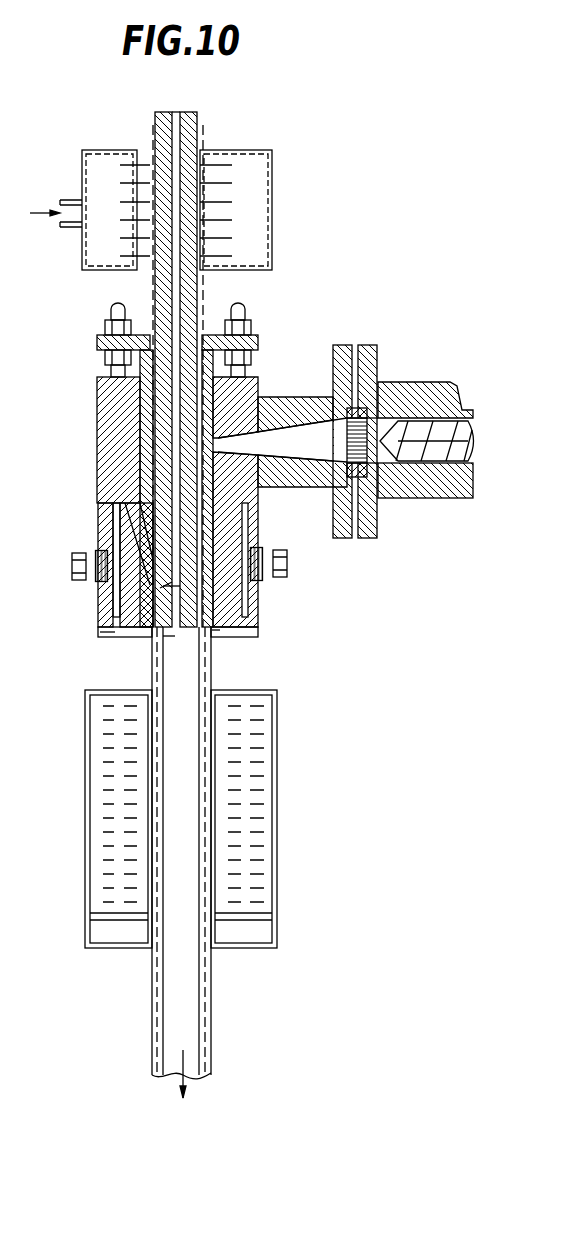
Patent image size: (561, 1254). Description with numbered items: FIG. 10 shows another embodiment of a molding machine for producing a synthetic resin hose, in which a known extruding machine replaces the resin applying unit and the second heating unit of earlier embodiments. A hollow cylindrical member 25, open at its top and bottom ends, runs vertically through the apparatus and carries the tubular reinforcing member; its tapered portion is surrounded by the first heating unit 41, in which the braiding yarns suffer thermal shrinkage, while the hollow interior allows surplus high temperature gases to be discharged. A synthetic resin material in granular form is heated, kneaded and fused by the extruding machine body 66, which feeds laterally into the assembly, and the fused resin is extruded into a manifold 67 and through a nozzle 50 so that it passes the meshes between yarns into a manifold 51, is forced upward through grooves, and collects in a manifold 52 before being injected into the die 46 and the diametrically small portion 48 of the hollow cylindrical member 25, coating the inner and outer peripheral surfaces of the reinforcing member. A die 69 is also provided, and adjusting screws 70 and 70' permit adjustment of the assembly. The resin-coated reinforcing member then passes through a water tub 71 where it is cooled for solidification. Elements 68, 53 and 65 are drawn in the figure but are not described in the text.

The hollow cylindrical member 25 is at (197, 127).
The first heating unit 41 is at (100, 176).
The adjusting screw 70' is at (204, 330).
The extruding machine body 66 is at (290, 397).
The manifold 67 is at (118, 447).
The inner sleeve 68 is at (143, 503).
The nozzle 50 is at (143, 570).
The manifold 51 is at (160, 588).
The manifold 52 is at (165, 586).
The mixing chamber 53 is at (108, 637).
The diametrically small portion 48 is at (163, 637).
The die 69 is at (218, 630).
The die 46 is at (257, 603).
The adjusting screw 70 is at (209, 571).
The water tub 71 is at (108, 822).
The outer tube 65 is at (215, 611).